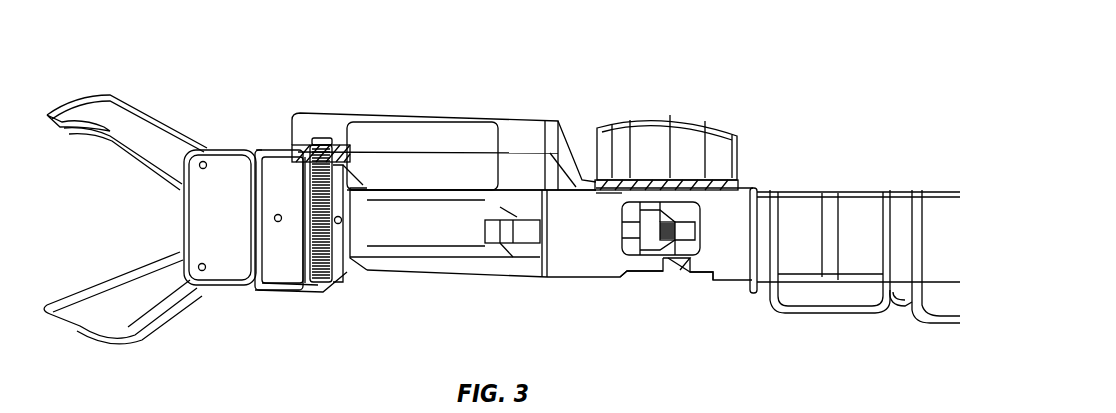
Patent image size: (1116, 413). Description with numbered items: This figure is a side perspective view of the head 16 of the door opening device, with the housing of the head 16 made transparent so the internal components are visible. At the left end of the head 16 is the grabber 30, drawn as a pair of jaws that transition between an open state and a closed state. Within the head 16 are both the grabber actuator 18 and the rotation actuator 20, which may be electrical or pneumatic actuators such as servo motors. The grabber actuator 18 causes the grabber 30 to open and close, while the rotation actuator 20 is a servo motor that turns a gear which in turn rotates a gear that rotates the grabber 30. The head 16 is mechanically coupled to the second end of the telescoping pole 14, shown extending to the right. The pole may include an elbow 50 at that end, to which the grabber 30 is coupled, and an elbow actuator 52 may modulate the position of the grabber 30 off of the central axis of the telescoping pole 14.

The grabber 30 is at (152, 132).
The head 16 is at (255, 147).
The rotation actuator 20 is at (458, 147).
The grabber actuator 18 is at (468, 253).
The elbow actuator 52 is at (673, 218).
The elbow 50 is at (668, 272).
The telescoping pole 14 is at (845, 212).